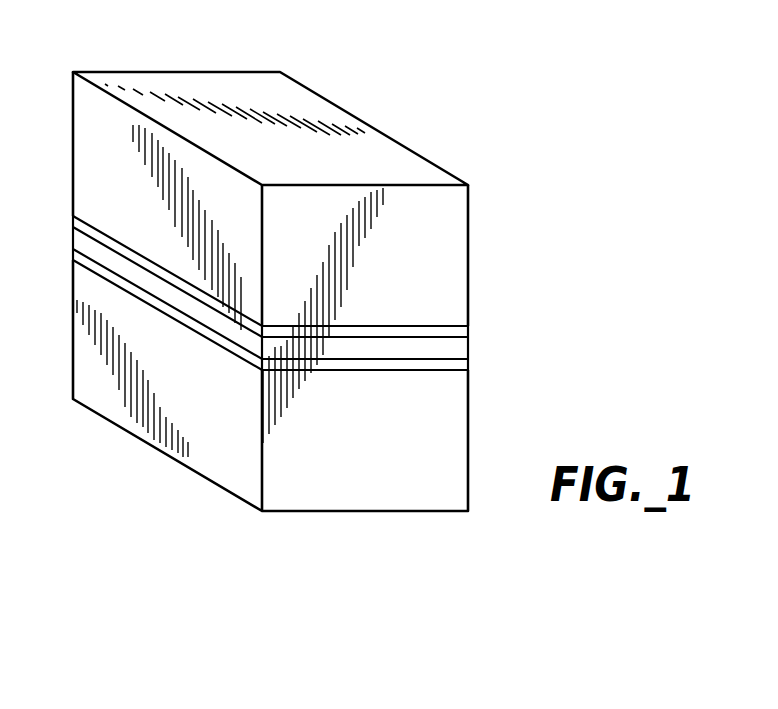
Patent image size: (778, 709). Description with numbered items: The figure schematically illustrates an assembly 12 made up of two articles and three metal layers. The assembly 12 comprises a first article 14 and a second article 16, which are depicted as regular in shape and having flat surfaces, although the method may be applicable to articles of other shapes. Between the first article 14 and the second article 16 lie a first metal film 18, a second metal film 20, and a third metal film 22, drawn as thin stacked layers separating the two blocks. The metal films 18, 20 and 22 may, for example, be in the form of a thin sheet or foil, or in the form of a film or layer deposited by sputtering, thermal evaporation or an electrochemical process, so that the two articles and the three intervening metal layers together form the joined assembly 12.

The assembly 12 is at (301, 257).
The first article 14 is at (455, 240).
The second article 16 is at (455, 472).
The first metal film 18 is at (463, 350).
The second metal film 20 is at (463, 332).
The third metal film 22 is at (463, 368).